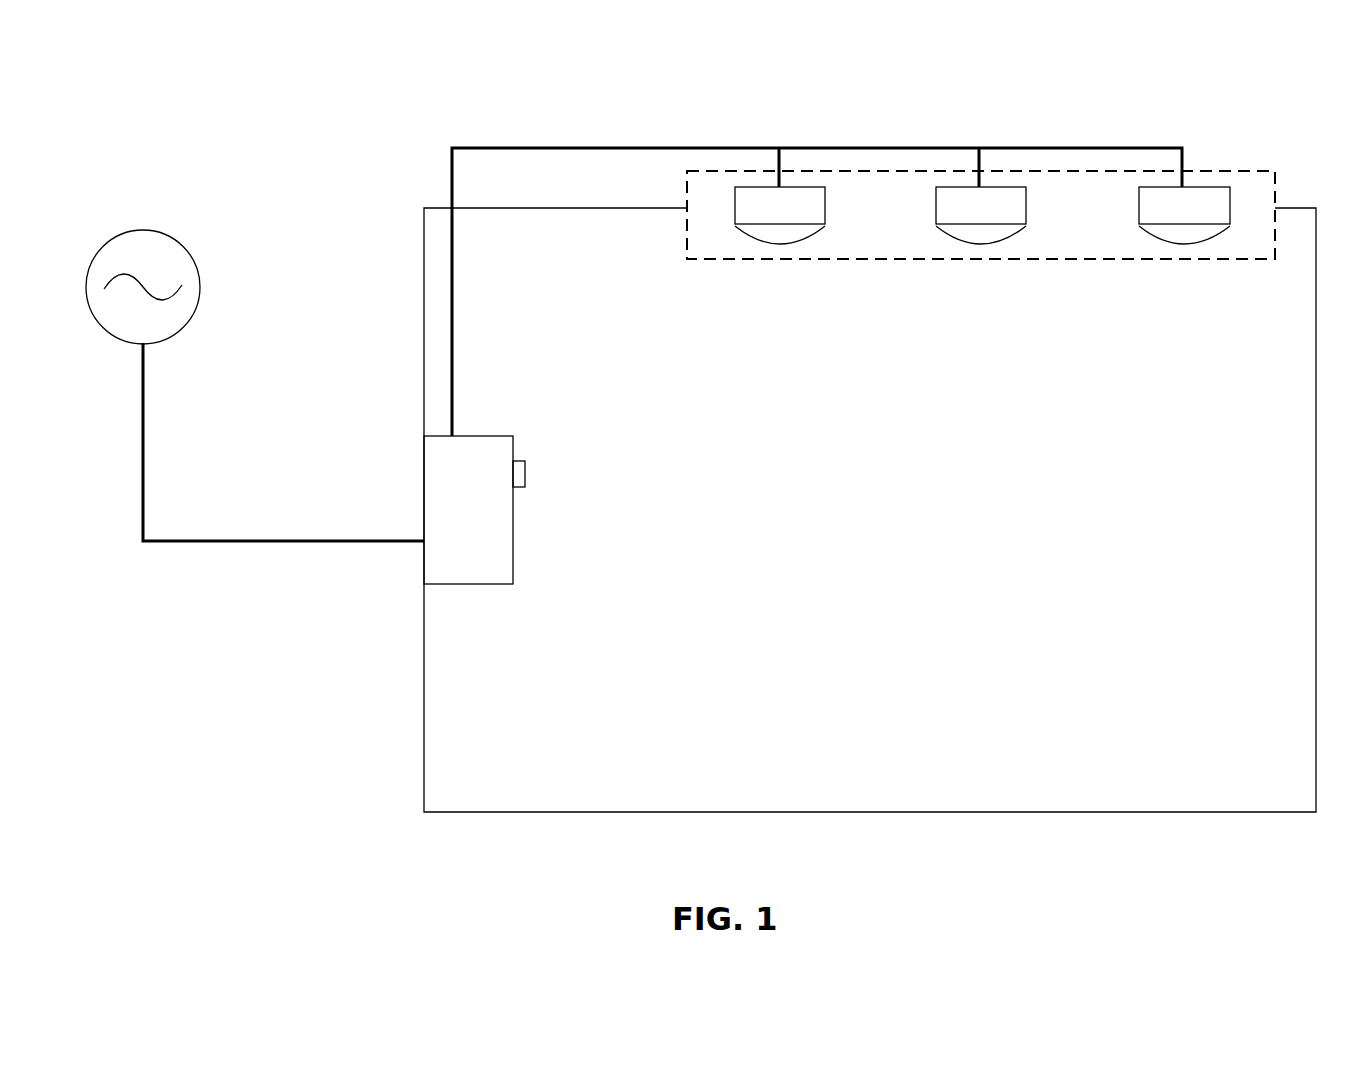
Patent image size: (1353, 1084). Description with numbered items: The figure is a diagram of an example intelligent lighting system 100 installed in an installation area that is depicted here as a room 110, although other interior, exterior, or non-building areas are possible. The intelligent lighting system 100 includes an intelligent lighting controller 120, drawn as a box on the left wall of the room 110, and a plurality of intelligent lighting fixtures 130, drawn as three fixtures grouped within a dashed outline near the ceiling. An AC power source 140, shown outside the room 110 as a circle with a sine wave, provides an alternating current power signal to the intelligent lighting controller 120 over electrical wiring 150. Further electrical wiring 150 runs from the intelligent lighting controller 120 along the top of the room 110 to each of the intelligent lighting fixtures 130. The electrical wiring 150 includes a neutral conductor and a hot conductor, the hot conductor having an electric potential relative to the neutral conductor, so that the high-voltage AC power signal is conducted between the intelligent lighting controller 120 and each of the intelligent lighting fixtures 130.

The intelligent lighting system 100 is at (380, 113).
The room 110 is at (917, 522).
The intelligent lighting controller 120 is at (424, 473).
The intelligent lighting fixtures 130 is at (1234, 171).
The AC power source 140 is at (170, 234).
The electrical wiring 150 is at (602, 147).